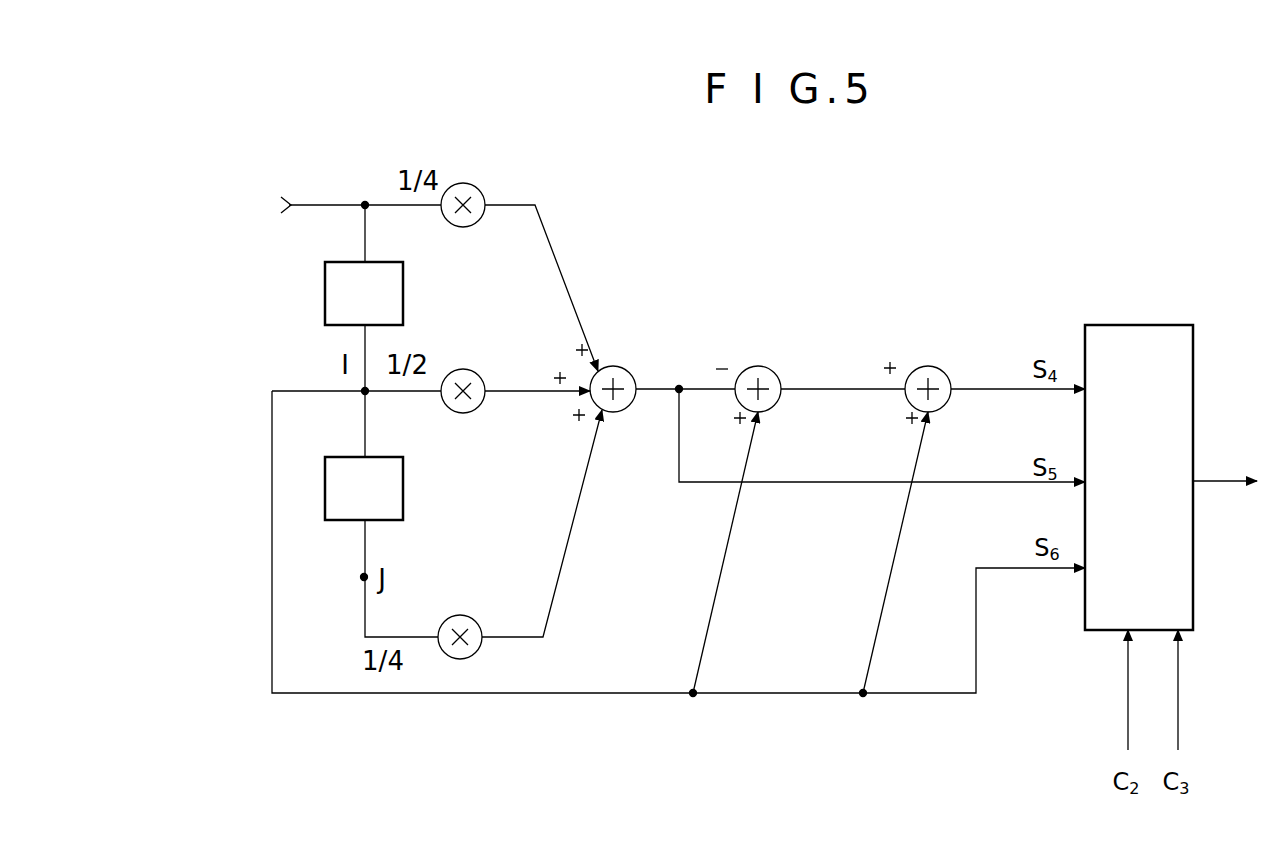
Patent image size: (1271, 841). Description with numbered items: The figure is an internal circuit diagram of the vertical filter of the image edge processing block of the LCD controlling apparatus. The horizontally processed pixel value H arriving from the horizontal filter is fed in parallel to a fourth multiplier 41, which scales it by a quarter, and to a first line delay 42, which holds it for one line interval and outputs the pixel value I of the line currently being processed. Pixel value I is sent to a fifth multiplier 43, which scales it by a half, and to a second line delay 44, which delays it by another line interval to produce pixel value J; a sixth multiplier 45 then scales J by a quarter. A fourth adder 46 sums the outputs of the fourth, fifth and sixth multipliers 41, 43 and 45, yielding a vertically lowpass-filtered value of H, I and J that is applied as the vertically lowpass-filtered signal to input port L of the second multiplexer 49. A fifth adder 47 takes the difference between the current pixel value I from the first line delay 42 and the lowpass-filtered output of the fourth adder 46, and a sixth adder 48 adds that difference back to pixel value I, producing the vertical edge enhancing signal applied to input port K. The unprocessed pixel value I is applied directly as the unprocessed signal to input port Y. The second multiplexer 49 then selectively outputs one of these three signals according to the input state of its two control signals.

The fourth multiplier 41 is at (466, 196).
The first line delay 42 is at (338, 275).
The fifth multiplier 43 is at (466, 374).
The second line delay 44 is at (404, 488).
The sixth multiplier 45 is at (462, 620).
The fourth adder 46 is at (616, 370).
The fifth adder 47 is at (764, 370).
The sixth adder 48 is at (942, 376).
The second multiplexer 49 is at (1182, 380).